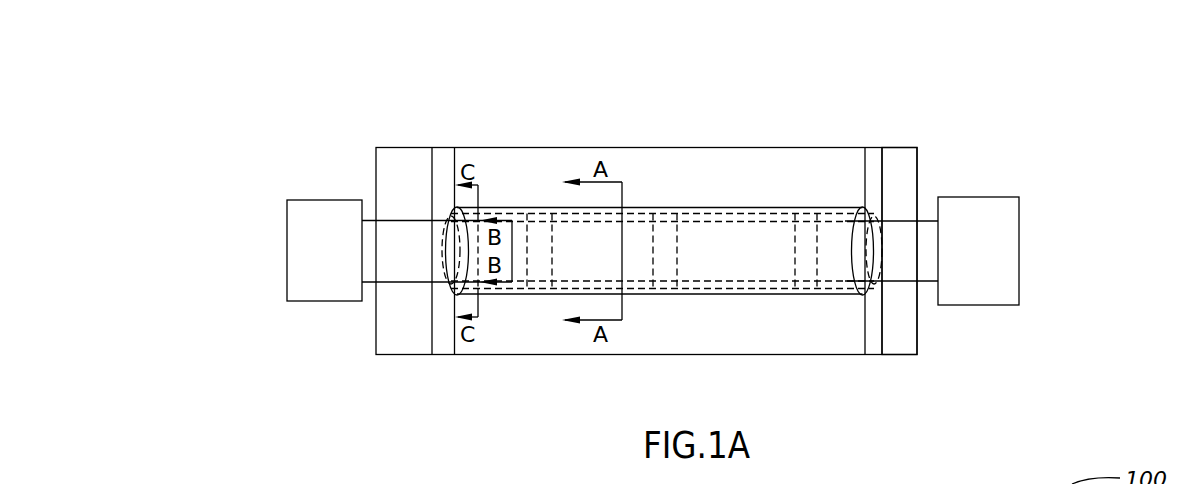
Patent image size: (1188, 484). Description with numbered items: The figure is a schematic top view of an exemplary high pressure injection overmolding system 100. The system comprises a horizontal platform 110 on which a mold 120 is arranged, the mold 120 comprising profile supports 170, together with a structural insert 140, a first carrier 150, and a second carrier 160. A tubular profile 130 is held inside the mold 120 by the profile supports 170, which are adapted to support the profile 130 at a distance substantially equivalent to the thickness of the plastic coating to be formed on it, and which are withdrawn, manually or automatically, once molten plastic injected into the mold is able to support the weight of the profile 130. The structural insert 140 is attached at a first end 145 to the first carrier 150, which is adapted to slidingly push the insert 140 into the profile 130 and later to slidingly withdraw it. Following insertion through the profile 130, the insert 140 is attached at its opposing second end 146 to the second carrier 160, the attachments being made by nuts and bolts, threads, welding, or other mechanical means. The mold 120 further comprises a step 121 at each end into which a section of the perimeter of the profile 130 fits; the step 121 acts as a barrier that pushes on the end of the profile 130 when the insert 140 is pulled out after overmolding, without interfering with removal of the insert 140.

The high pressure injection overmolding system 100 is at (1030, 100).
The horizontal platform 110 is at (412, 147).
The mold 120 is at (672, 206).
The step 121 is at (440, 330).
The profile 130 is at (743, 213).
The structural insert 140 is at (896, 220).
The first end 145 is at (940, 250).
The second end 146 is at (360, 253).
The first carrier 150 is at (1019, 249).
The second carrier 160 is at (287, 247).
The profile supports 170 is at (542, 265).